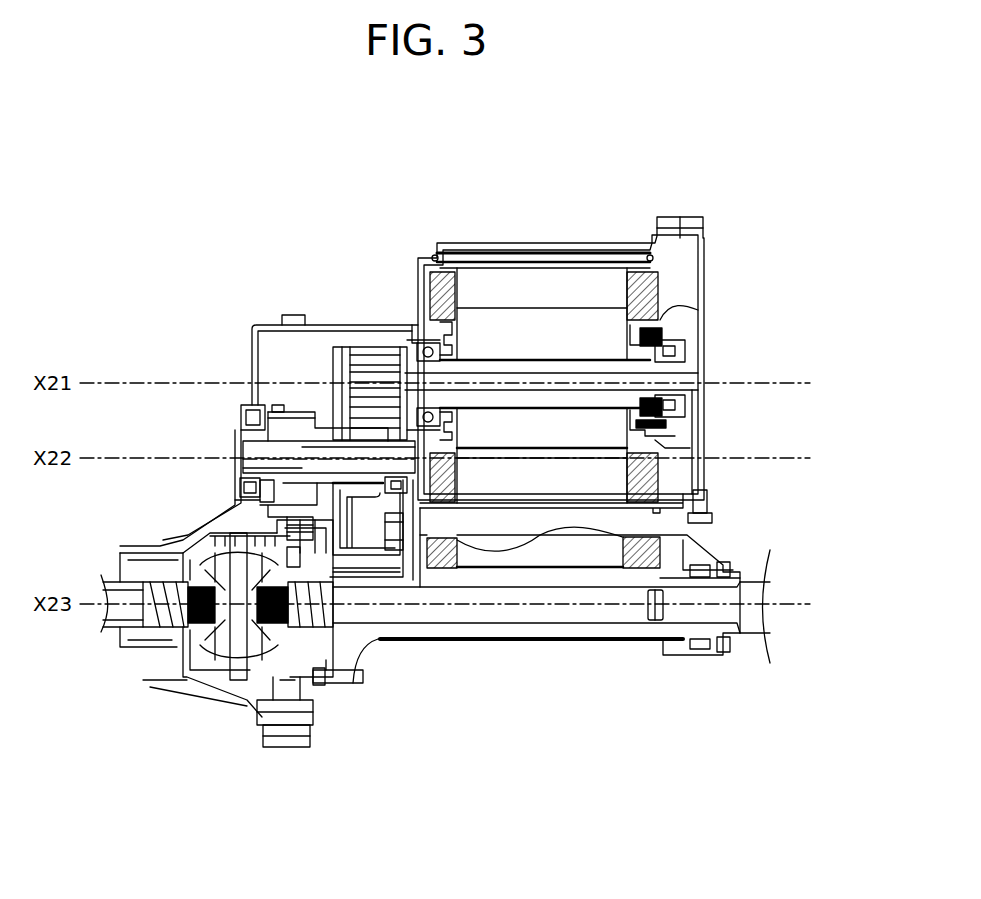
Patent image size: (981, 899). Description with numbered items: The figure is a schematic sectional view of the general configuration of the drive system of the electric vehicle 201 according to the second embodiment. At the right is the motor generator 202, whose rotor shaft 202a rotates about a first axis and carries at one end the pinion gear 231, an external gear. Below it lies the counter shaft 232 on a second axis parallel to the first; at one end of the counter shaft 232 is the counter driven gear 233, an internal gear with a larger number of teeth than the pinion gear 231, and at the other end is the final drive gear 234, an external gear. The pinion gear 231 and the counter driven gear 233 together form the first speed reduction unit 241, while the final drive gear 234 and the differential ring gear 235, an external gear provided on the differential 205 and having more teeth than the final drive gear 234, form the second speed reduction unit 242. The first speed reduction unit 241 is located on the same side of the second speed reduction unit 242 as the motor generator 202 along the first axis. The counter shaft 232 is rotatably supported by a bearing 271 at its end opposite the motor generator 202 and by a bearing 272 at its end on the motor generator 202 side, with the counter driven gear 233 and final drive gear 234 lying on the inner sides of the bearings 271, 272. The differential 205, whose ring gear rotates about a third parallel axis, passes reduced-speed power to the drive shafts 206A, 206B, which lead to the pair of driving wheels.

The electric vehicle 201 is at (612, 166).
The motor generator 202 is at (658, 258).
The rotor shaft 202a is at (508, 370).
The pinion gear 231 is at (390, 368).
The counter shaft 232 is at (305, 332).
The counter driven gear 233 is at (377, 348).
The final drive gear 234 is at (278, 405).
The differential ring gear 235 is at (238, 486).
The first speed reduction unit 241 is at (333, 362).
The second speed reduction unit 242 is at (324, 503).
The bearing 271 is at (247, 415).
The bearing 272 is at (407, 513).
The differential 205 is at (185, 539).
The drive shaft 206A is at (562, 614).
The drive shaft 206B is at (113, 632).